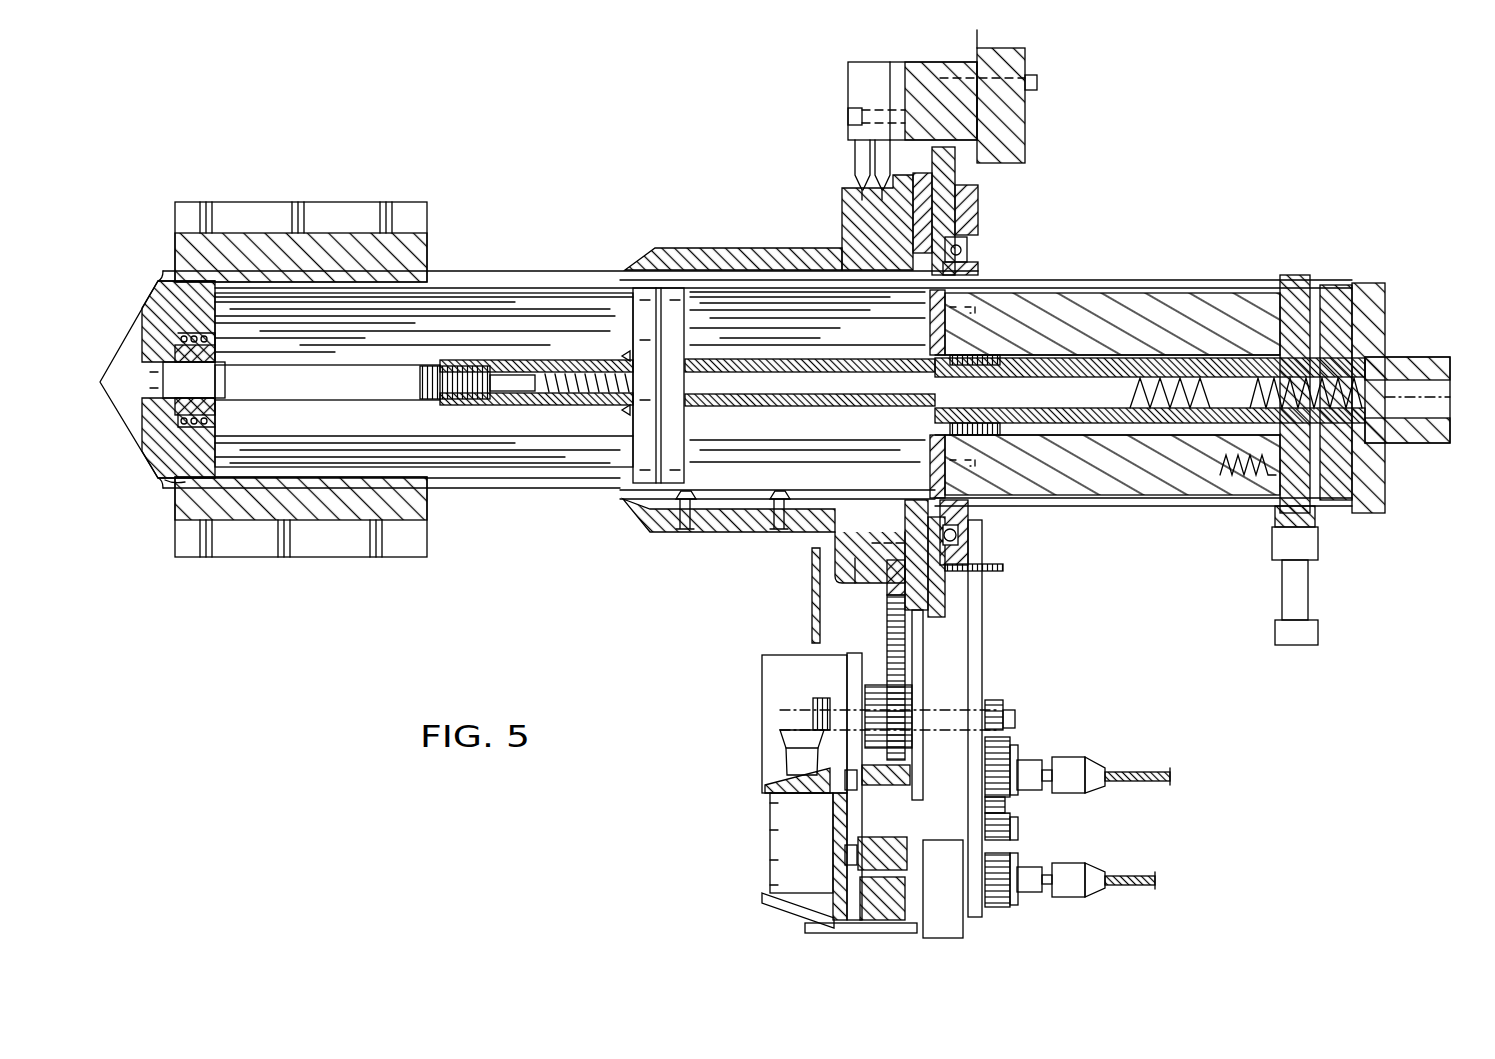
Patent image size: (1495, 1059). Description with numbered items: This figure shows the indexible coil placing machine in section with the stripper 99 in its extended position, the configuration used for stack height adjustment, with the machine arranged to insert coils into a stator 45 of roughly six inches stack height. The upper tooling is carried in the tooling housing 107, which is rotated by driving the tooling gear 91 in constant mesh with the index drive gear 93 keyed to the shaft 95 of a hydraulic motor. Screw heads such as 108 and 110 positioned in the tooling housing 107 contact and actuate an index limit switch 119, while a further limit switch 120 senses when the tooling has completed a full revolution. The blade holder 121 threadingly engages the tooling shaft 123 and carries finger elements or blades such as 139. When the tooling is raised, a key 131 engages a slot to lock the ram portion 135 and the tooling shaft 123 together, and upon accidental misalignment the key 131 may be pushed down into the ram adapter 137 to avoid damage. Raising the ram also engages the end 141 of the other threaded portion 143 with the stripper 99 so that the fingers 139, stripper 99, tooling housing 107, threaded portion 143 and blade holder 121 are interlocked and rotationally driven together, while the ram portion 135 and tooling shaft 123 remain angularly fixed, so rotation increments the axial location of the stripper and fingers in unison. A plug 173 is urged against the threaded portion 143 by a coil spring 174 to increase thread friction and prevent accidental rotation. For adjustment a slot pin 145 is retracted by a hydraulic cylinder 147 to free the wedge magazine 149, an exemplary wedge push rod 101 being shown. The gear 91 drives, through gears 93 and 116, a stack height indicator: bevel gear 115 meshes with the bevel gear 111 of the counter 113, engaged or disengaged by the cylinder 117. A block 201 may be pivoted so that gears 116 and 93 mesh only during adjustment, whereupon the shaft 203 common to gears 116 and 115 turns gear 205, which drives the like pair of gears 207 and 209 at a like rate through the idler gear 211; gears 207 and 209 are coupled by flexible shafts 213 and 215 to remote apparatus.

The stator 45 is at (315, 557).
The tooling gear 91 is at (860, 192).
The index drive gear 93 is at (905, 630).
The shaft 95 is at (915, 677).
The stripper 99 is at (125, 355).
The wedge push rod 101 is at (1308, 282).
The tooling housing 107 is at (750, 248).
The screw head 108 is at (855, 175).
The screw head 110 is at (835, 590).
The bevel gear 111 is at (790, 730).
The counter 113 is at (790, 840).
The bevel gear 115 is at (815, 710).
The gear 116 is at (995, 765).
The cylinder 117 is at (970, 900).
The index limit switch 119 is at (860, 85).
The limit switch 120 is at (890, 110).
The blade holder 121 is at (642, 313).
The tooling shaft 123 is at (616, 430).
The key 131 is at (1388, 443).
The ram portion 135 is at (535, 370).
The ram adapter 137 is at (1375, 355).
The finger element 139 is at (170, 480).
The end 141 is at (170, 420).
The threaded portion 143 is at (344, 373).
The slot pin 145 is at (1315, 528).
The hydraulic cylinder 147 is at (1282, 620).
The wedge magazine 149 is at (1105, 495).
The plug 173 is at (507, 400).
The coil spring 174 is at (1165, 362).
The block 201 is at (900, 928).
The shaft 203 is at (1015, 738).
The gear 205 is at (1010, 703).
The gear 207 is at (1010, 803).
The gear 209 is at (1018, 897).
The idler gear 211 is at (1010, 830).
The flexible shaft 213 is at (1145, 772).
The flexible shaft 215 is at (1160, 875).